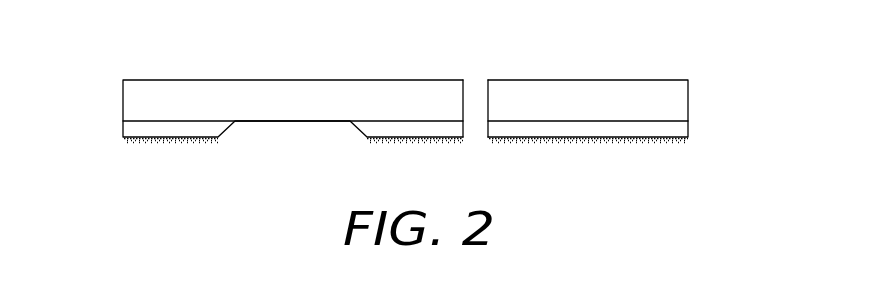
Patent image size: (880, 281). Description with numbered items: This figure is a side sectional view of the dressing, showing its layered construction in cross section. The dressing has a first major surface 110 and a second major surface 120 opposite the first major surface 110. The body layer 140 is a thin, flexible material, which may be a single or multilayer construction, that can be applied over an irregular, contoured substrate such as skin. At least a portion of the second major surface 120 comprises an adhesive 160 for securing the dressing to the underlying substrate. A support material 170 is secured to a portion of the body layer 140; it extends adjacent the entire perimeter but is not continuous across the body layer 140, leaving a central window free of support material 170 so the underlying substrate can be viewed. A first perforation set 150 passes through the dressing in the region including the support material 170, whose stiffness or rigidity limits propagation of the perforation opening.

The first major surface 110 is at (594, 42).
The second major surface 120 is at (594, 176).
The body layer 140 is at (698, 82).
The first perforation set 150 is at (473, 70).
The adhesive 160 is at (158, 138).
The support material 170 is at (138, 128).